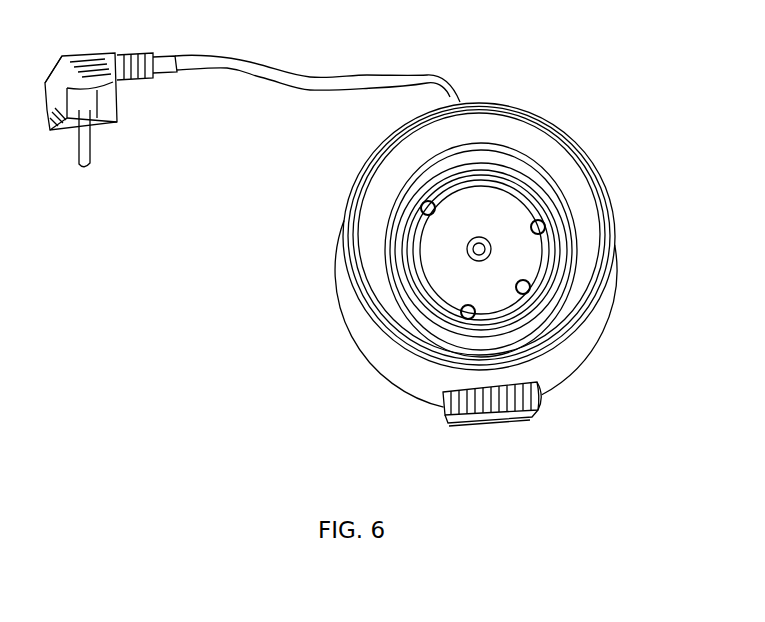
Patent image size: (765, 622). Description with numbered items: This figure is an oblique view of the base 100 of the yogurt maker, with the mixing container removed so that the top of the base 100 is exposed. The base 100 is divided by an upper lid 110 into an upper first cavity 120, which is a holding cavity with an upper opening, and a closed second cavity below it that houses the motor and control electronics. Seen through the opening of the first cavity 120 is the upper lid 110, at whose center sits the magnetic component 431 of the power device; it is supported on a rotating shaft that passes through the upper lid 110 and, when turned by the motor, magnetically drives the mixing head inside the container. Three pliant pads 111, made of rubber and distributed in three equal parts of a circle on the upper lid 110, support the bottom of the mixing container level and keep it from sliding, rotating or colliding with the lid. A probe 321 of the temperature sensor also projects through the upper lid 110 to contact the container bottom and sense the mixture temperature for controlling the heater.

The base 100 is at (498, 117).
The first cavity 120 is at (410, 172).
The upper lid 110 is at (453, 233).
The magnetic component 431 is at (463, 256).
The pliant pads 111 is at (468, 312).
The probe 321 is at (567, 337).